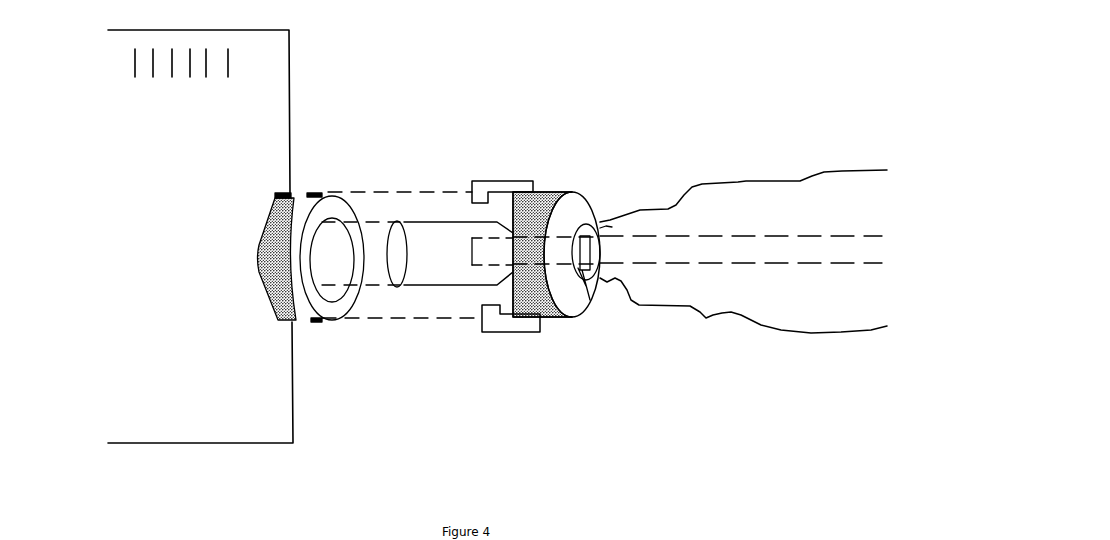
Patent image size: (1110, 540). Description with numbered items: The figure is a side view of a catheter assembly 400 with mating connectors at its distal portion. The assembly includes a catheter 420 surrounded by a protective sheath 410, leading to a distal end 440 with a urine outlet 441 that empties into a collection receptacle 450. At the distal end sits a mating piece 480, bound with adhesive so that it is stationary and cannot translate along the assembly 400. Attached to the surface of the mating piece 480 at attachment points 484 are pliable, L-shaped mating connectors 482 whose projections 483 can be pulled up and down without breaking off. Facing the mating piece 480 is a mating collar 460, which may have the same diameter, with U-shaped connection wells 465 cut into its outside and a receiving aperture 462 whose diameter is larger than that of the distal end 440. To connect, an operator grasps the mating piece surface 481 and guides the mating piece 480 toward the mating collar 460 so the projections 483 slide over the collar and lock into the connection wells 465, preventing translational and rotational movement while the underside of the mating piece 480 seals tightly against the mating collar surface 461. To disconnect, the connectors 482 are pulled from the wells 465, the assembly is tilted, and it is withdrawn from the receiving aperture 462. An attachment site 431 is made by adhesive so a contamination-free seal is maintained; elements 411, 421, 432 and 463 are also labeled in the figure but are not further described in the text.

The catheter assembly 400 is at (72, 233).
The protective sheath 410 is at (752, 181).
The fiber cladding 411 is at (607, 227).
The catheter 420 is at (743, 248).
The aperture 421 is at (488, 256).
The attachment site 431 is at (576, 282).
The fiber core end 432 is at (585, 275).
The distal end 440 is at (440, 245).
The urine outlet 441 is at (397, 270).
The collection receptacle 450 is at (248, 117).
The mating collar 460 is at (285, 303).
The mating collar surface 461 is at (330, 308).
The receiving aperture 462 is at (333, 267).
The lens mount tab 463 is at (278, 191).
The connection wells 465 is at (303, 193).
The mating piece 480 is at (540, 212).
The mating piece surface 481 is at (573, 212).
The mating connectors 482 is at (487, 183).
The projections 483 is at (500, 309).
The attachment points 484 is at (535, 190).